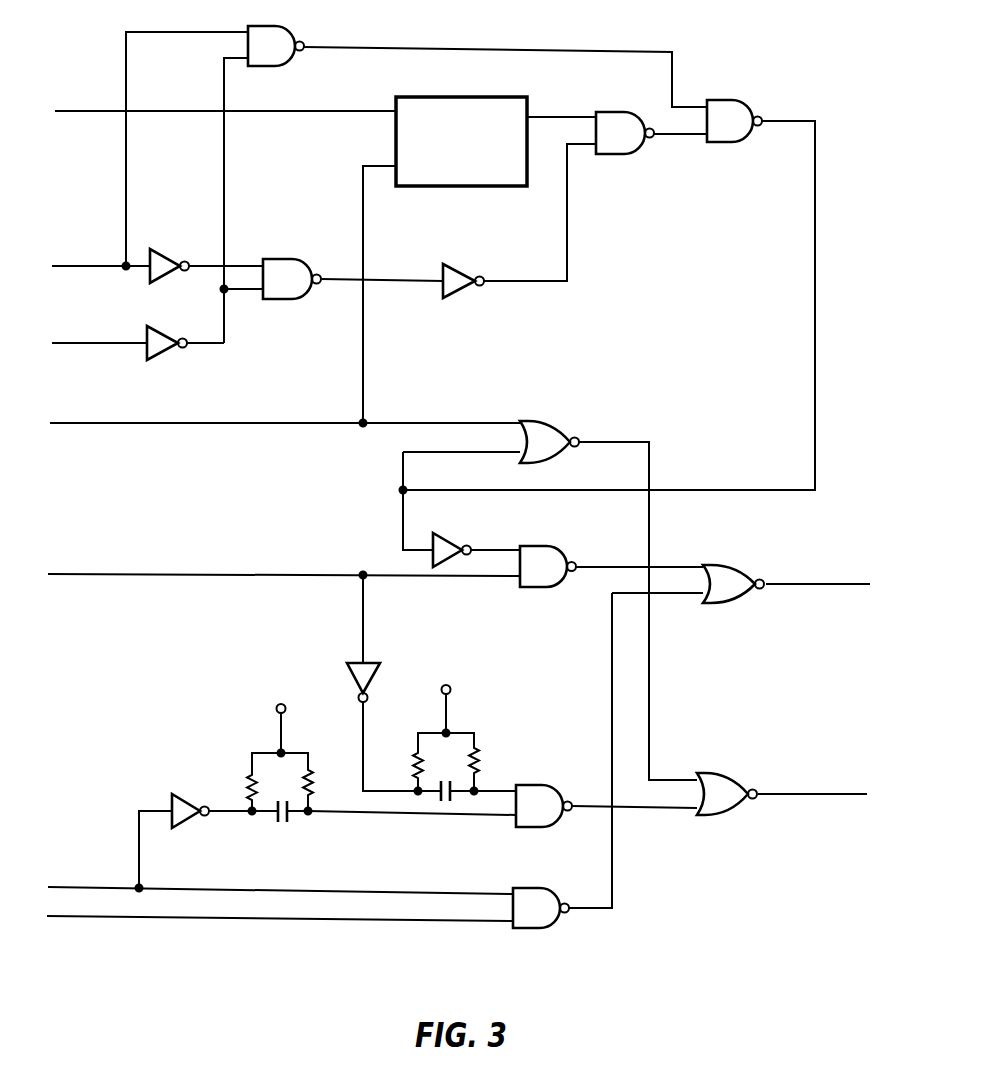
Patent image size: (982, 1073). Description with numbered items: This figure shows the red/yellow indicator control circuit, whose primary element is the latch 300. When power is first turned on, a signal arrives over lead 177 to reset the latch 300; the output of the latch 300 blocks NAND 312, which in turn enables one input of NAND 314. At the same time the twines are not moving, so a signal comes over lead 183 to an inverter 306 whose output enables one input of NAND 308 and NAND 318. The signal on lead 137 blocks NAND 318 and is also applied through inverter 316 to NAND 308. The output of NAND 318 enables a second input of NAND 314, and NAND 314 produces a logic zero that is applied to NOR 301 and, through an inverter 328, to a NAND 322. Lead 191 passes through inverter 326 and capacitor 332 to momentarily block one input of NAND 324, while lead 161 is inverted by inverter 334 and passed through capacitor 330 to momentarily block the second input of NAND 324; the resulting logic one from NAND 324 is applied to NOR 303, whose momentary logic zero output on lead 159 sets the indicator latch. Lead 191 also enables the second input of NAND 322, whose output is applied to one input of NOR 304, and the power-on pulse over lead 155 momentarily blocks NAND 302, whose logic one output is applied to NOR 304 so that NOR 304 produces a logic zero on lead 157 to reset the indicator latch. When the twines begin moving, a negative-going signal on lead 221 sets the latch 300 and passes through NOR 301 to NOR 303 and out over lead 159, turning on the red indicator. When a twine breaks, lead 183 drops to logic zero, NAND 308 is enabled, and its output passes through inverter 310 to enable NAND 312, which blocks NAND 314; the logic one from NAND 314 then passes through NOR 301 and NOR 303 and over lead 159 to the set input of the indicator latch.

The lead 177 is at (101, 110).
The lead 137 is at (97, 265).
The lead 183 is at (107, 343).
The lead 221 is at (88, 422).
The lead 191 is at (117, 573).
The lead 161 is at (78, 887).
The lead 155 is at (73, 918).
The lead 157 is at (803, 584).
The lead 159 is at (801, 793).
The latch 300 is at (489, 175).
The NOR 301 is at (543, 428).
The NAND 302 is at (540, 917).
The NOR 303 is at (722, 776).
The NOR 304 is at (725, 589).
The inverter 306 is at (162, 342).
The NAND 308 is at (290, 267).
The inverter 310 is at (457, 278).
The NAND 312 is at (622, 143).
The NAND 314 is at (725, 132).
The inverter 316 is at (160, 258).
The NAND 318 is at (284, 35).
The NAND 322 is at (544, 549).
The NAND 324 is at (538, 787).
The inverter 326 is at (372, 663).
The inverter 328 is at (447, 542).
The capacitor 330 is at (293, 820).
The capacitor 332 is at (452, 798).
The inverter 334 is at (182, 821).